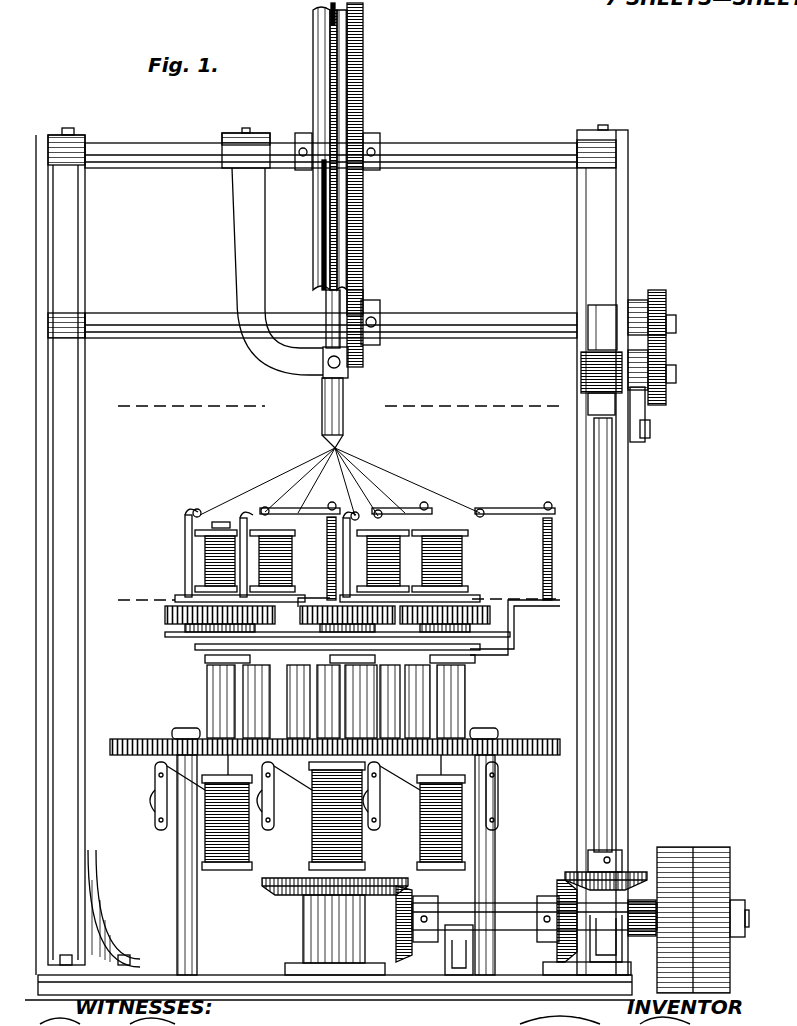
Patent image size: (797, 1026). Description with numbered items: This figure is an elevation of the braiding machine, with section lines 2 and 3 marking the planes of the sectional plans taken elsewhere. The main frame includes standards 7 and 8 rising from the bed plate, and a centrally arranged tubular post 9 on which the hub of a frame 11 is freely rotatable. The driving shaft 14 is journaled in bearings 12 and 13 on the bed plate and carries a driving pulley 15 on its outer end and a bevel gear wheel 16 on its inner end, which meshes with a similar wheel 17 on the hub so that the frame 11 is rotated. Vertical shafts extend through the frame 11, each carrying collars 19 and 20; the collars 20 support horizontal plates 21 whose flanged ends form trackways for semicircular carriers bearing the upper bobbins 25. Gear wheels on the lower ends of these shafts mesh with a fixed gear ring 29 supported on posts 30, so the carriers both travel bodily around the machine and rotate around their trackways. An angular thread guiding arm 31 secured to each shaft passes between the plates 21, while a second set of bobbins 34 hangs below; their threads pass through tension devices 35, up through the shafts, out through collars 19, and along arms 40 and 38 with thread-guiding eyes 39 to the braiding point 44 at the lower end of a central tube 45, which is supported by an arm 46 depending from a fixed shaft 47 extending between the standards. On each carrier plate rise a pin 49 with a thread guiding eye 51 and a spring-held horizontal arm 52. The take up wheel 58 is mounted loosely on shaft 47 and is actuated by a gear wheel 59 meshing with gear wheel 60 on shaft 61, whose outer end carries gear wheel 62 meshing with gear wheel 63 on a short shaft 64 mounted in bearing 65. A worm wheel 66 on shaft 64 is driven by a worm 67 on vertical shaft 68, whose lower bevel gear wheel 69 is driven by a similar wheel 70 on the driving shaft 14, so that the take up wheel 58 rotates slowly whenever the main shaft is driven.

The section line 2— 2 is at (332, 405).
The section line 3— 3 is at (333, 597).
The standard 7 is at (630, 664).
The standard 8 is at (40, 560).
The tubular post 9 is at (320, 917).
The frame 11 is at (210, 696).
The bearing 12 is at (458, 904).
The bearing 13 is at (606, 930).
The driving shaft 14 is at (513, 906).
The driving pulley 15 is at (680, 847).
The bevel gear wheel 16 is at (397, 930).
The bevel gear wheel 17 is at (383, 877).
The collar 19 is at (205, 660).
The collar 20 is at (210, 646).
The plate 21 is at (172, 635).
The bobbin 25 is at (205, 564).
The gear ring 29 is at (517, 738).
The post 30 is at (495, 813).
The thread guiding arm 31 is at (515, 625).
The bobbin 34 is at (225, 844).
The tension device 35 is at (155, 807).
The arm 38 is at (297, 509).
The thread-guiding eye 39 is at (263, 508).
The arm 40 is at (510, 516).
The braiding point 44 is at (342, 450).
The tube 45 is at (346, 386).
The arm 46 is at (240, 246).
The fixed shaft 47 is at (492, 160).
The pin 49 is at (185, 539).
The thread guiding eye 51 is at (195, 512).
The arm 52 is at (226, 514).
The take up wheel 58 is at (312, 93).
The gear wheel 59 is at (365, 112).
The gear wheel 60 is at (364, 292).
The shaft 61 is at (478, 314).
The gear wheel 62 is at (668, 298).
The gear wheel 63 is at (670, 350).
The short shaft 64 is at (668, 396).
The bearing 65 is at (645, 403).
The worm wheel 66 is at (590, 346).
The worm 67 is at (582, 364).
The vertical shaft 68 is at (606, 587).
The bevel gear wheel 69 is at (640, 870).
The bevel gear wheel 70 is at (556, 898).